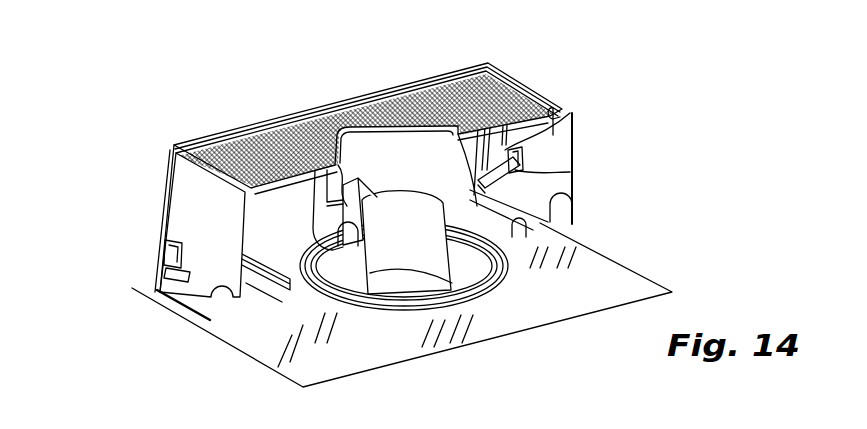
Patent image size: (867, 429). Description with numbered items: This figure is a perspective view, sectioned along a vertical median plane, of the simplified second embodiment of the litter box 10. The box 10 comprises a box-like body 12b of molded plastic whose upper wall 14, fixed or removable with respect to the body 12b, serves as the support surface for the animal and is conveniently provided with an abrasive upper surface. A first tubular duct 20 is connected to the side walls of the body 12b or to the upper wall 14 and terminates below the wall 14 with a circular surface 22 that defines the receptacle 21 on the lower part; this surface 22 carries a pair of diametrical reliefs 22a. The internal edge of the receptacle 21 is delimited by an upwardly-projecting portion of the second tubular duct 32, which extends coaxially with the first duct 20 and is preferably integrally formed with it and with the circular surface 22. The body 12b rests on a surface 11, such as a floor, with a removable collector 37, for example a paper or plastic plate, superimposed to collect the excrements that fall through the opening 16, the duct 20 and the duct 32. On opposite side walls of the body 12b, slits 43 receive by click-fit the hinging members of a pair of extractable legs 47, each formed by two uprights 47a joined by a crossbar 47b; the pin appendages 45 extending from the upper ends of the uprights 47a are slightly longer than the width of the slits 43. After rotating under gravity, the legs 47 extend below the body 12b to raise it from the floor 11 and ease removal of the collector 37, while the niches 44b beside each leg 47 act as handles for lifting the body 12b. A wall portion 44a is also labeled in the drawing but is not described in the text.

The box 10 is at (705, 120).
The surface 11 is at (618, 283).
The body 12b is at (163, 165).
The upper wall 14 is at (242, 157).
The opening 16 is at (398, 143).
The first tubular duct 20 is at (510, 135).
The receptacle 21 is at (452, 188).
The circular surface 22 is at (355, 217).
The diametrical reliefs 22a is at (352, 192).
The second tubular duct 32 is at (377, 217).
The removable collector 37 is at (487, 292).
The slits 43 is at (172, 242).
The first wall 44a is at (218, 290).
The niches 44b is at (574, 202).
The pin appendages 45 is at (175, 268).
The extractable legs 47 is at (572, 168).
The uprights 47a is at (540, 192).
The crossbar 47b is at (245, 283).